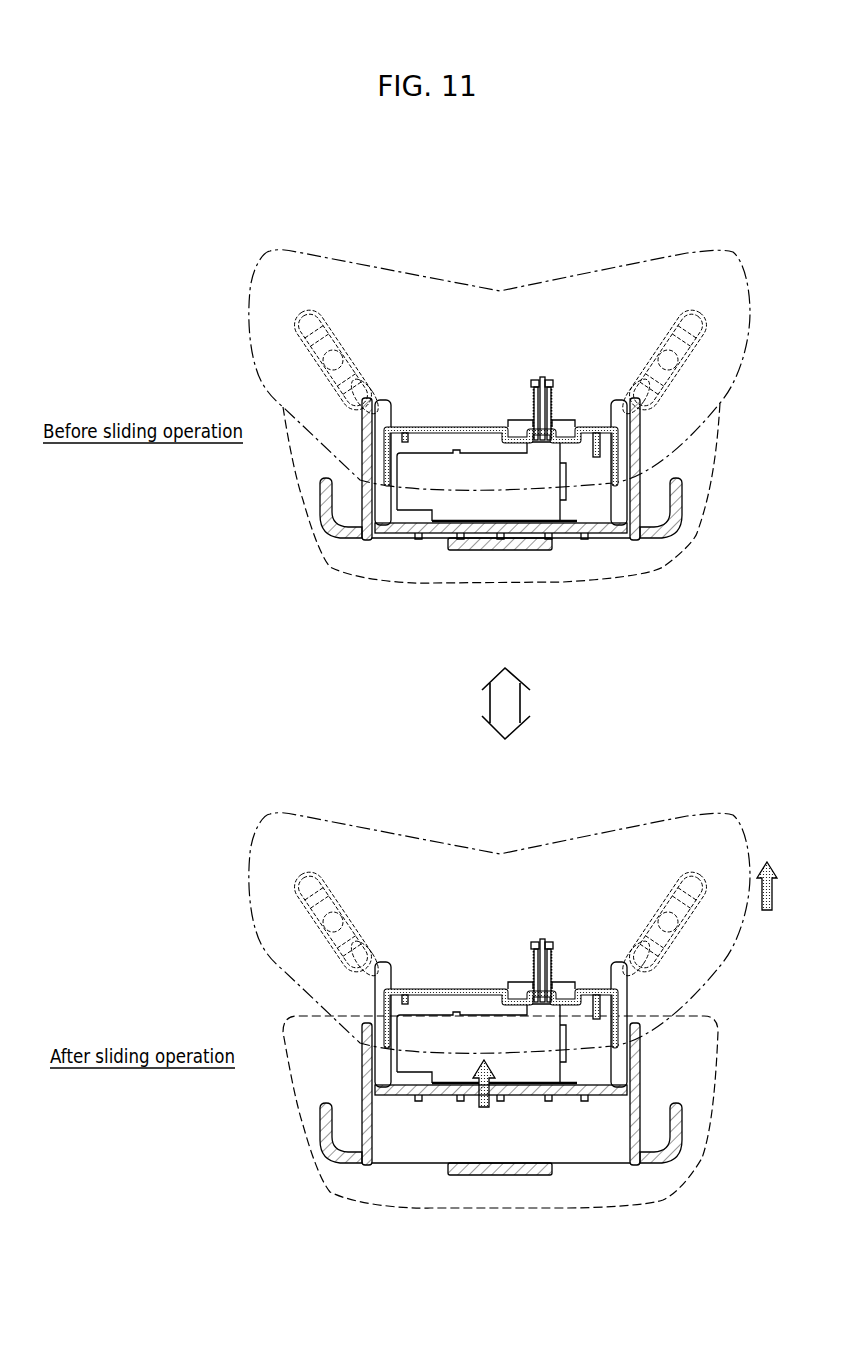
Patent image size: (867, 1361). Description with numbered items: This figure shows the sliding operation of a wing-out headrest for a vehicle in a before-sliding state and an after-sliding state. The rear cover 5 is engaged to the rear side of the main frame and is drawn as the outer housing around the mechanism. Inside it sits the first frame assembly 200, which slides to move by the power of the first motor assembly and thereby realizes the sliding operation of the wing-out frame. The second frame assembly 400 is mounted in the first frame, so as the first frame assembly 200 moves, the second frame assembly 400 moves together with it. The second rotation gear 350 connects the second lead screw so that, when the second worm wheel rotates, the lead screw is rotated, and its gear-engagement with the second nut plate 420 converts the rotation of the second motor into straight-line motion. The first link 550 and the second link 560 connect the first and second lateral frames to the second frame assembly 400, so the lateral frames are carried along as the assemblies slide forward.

The rear cover 5 is at (363, 532).
The first frame assembly 200 is at (612, 529).
The second rotation gear 350 is at (541, 376).
The second frame assembly 400 is at (587, 422).
The second nut plate 420 is at (530, 380).
The first link 550 is at (315, 309).
The second link 560 is at (682, 309).